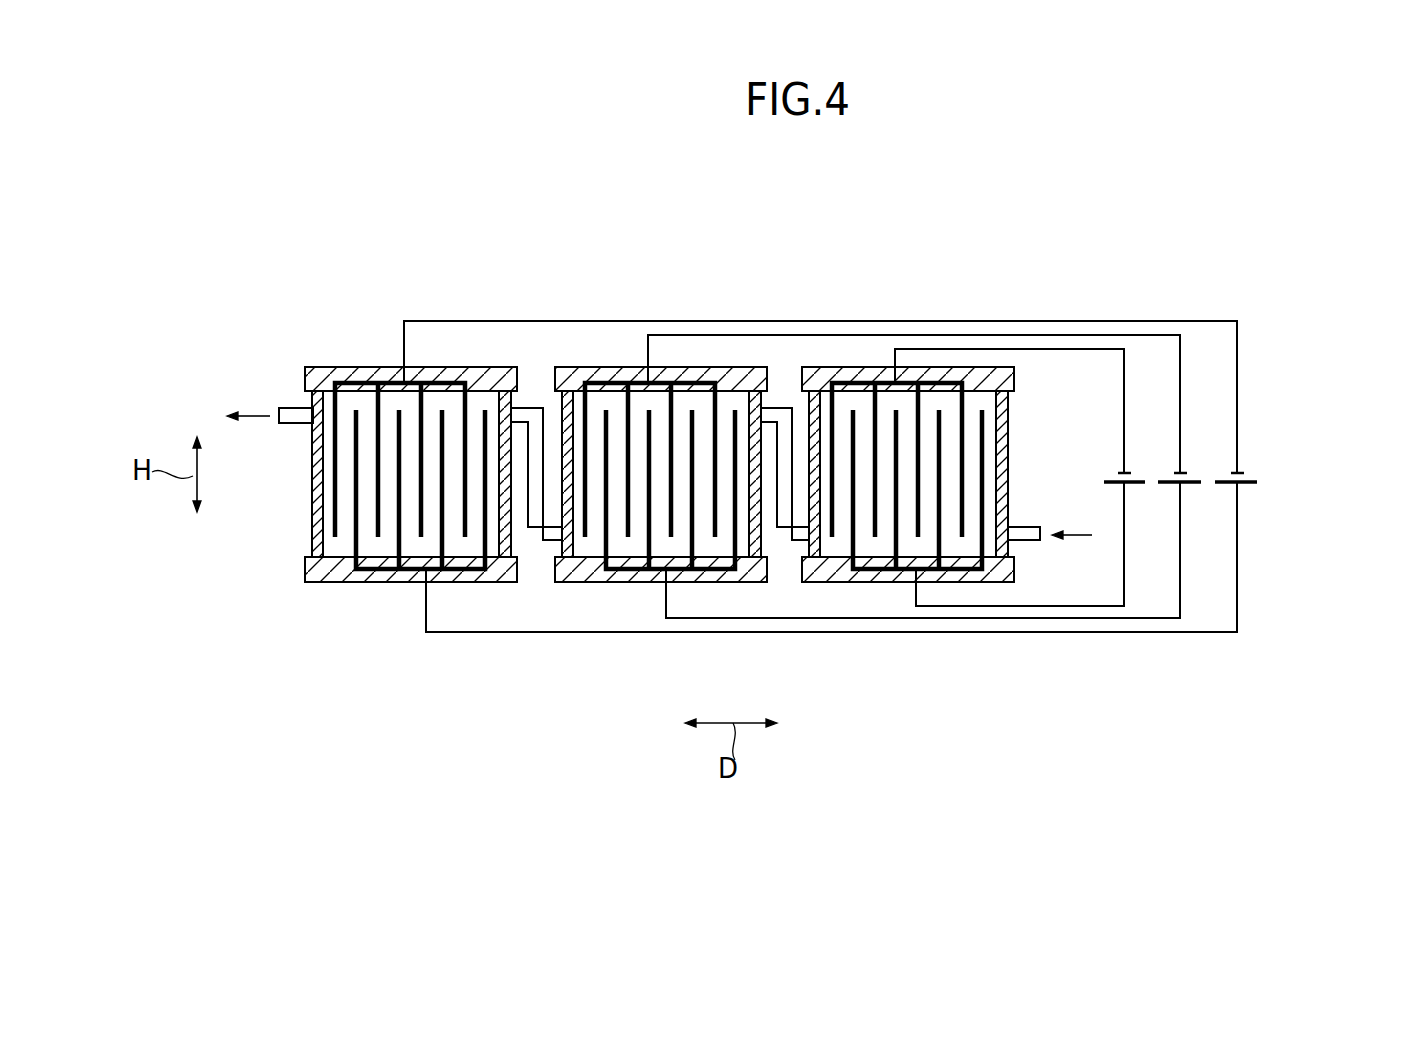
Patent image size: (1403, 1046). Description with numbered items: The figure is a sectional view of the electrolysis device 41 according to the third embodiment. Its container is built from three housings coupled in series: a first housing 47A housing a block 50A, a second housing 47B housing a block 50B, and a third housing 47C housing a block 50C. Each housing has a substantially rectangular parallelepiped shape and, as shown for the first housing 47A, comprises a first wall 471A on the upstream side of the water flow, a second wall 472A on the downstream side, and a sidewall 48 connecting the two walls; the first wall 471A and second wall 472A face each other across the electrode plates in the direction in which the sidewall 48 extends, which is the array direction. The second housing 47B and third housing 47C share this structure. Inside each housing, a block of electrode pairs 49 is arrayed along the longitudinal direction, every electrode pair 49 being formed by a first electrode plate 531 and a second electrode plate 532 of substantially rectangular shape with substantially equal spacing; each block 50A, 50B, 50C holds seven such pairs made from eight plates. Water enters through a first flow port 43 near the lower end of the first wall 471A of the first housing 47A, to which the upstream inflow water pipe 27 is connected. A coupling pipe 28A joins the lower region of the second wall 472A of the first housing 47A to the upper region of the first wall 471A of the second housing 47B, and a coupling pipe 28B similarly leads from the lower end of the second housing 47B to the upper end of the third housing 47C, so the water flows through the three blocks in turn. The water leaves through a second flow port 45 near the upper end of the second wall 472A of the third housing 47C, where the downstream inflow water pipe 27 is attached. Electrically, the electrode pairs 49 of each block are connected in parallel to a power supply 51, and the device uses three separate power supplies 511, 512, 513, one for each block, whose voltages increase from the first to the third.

The electrolysis device 41 is at (311, 199).
The first housing 47A is at (857, 363).
The second housing 47B is at (612, 363).
The third housing 47C is at (353, 363).
The sidewall 48 is at (333, 583).
The first wall 471A is at (1008, 443).
The second wall 472A is at (565, 408).
The block 50A is at (1000, 500).
The block 50B is at (728, 408).
The block 50C is at (478, 408).
The electrode pair 49 is at (1000, 570).
The first electrode plate 531 is at (980, 543).
The second electrode plate 532 is at (958, 523).
The inflow water pipe 27 is at (292, 423).
The first flow port 43 is at (1008, 540).
The second flow port 45 is at (305, 415).
The coupling pipe 28A is at (792, 535).
The coupling pipe 28B is at (543, 535).
The power supply 51 is at (902, 476).
The power supply 511 is at (1133, 492).
The power supply 512 is at (1188, 492).
The power supply 513 is at (1247, 495).